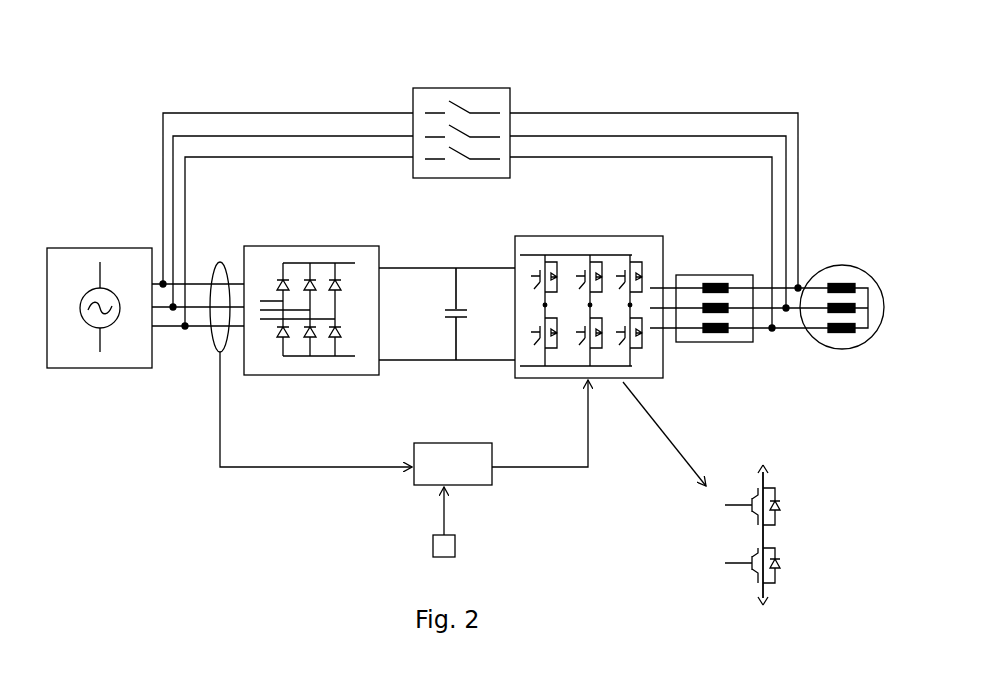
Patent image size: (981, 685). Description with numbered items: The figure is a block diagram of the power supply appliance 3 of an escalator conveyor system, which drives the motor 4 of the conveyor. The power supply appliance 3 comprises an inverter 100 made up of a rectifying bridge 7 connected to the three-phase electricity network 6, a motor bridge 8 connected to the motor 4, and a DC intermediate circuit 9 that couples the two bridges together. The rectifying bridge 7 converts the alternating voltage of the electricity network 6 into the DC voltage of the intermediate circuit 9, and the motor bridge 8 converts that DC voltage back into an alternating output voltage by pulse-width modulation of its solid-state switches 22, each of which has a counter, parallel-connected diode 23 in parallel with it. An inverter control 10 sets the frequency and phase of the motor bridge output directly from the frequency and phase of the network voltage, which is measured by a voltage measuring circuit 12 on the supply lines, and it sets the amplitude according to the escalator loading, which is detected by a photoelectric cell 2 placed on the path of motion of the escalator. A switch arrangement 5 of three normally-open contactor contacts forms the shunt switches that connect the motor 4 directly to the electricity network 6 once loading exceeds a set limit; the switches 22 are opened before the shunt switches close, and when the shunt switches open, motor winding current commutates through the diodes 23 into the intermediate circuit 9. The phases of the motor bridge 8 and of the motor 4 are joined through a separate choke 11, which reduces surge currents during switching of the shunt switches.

The photoelectric cell 2 is at (433, 542).
The power supply appliance 3 is at (575, 90).
The motor 4 is at (843, 265).
The switch arrangement 5 is at (465, 88).
The electricity network 6 is at (100, 248).
The rectifying bridge 7 is at (323, 246).
The motor bridge 8 is at (593, 236).
The DC intermediate circuit 9 is at (443, 365).
The inverter control 10 is at (475, 488).
The choke 11 is at (700, 273).
The voltage measuring circuit 12 is at (219, 353).
The solid-state switches 22 is at (752, 514).
The counter, parallel-connected diodes 23 is at (780, 506).
The inverter 100 is at (512, 236).